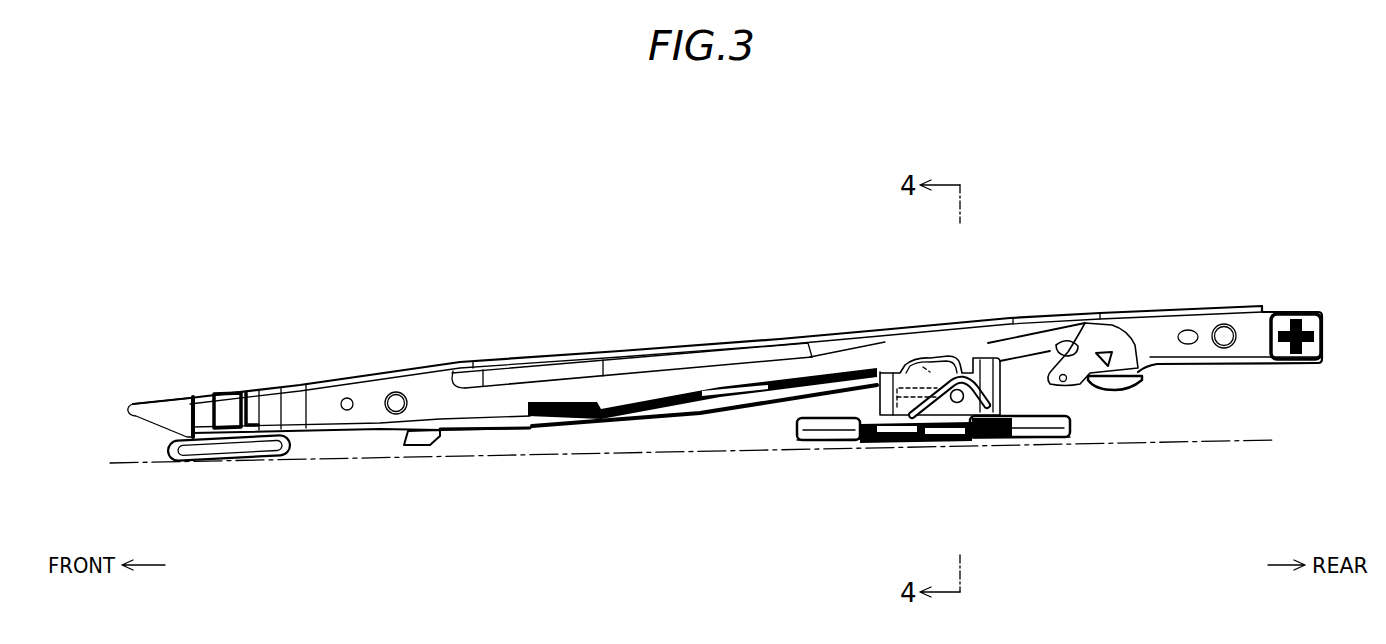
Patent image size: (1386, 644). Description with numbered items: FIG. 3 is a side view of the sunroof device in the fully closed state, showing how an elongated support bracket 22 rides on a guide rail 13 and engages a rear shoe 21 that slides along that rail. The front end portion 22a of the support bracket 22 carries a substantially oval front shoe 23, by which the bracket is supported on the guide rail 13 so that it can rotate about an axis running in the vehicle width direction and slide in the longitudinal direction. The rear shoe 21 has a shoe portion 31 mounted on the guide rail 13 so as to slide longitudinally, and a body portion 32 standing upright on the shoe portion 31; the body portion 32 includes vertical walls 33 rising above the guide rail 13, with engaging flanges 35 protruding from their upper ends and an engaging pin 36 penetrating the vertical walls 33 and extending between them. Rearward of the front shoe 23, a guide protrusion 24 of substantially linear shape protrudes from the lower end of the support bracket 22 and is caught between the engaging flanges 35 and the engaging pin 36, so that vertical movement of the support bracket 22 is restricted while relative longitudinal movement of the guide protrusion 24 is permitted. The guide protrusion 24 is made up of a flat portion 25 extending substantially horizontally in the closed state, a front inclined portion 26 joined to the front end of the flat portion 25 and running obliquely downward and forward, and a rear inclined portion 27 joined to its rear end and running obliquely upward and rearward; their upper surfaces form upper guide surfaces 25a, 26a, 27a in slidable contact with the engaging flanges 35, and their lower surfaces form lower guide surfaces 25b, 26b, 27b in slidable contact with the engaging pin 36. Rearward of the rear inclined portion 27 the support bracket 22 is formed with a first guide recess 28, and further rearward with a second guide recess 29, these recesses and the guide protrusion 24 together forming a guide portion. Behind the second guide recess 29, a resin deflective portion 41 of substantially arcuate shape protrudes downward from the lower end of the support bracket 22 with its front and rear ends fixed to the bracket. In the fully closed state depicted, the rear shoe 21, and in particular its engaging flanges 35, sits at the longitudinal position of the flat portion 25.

The guide rail 13 is at (1238, 438).
The rear shoe 21 is at (1019, 459).
The support bracket 22 is at (1219, 289).
The front end portion 22a is at (253, 388).
The front shoe 23 is at (258, 461).
The guide protrusion 24 is at (839, 364).
The flat portion 25 is at (924, 391).
The upper guide surface 25a is at (923, 367).
The lower guide surface 25b is at (908, 440).
The front inclined portion 26 is at (658, 413).
The upper guide surface 26a is at (722, 388).
The lower guide surface 26b is at (737, 410).
The rear inclined portion 27 is at (1041, 357).
The upper guide surface 27a is at (996, 372).
The lower guide surface 27b is at (1046, 388).
The first guide recess 28 is at (1057, 344).
The second guide recess 29 is at (1081, 363).
The shoe portion 31 is at (820, 443).
The body portion 32 is at (899, 372).
The vertical wall 33 is at (943, 443).
The engaging flange 35 is at (941, 357).
The engaging pin 36 is at (977, 445).
The deflective portion 41 is at (1127, 391).